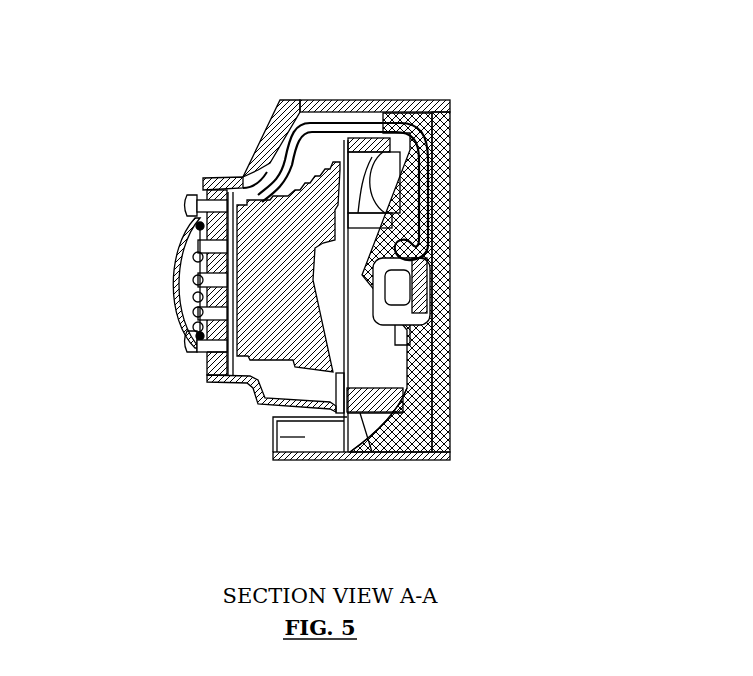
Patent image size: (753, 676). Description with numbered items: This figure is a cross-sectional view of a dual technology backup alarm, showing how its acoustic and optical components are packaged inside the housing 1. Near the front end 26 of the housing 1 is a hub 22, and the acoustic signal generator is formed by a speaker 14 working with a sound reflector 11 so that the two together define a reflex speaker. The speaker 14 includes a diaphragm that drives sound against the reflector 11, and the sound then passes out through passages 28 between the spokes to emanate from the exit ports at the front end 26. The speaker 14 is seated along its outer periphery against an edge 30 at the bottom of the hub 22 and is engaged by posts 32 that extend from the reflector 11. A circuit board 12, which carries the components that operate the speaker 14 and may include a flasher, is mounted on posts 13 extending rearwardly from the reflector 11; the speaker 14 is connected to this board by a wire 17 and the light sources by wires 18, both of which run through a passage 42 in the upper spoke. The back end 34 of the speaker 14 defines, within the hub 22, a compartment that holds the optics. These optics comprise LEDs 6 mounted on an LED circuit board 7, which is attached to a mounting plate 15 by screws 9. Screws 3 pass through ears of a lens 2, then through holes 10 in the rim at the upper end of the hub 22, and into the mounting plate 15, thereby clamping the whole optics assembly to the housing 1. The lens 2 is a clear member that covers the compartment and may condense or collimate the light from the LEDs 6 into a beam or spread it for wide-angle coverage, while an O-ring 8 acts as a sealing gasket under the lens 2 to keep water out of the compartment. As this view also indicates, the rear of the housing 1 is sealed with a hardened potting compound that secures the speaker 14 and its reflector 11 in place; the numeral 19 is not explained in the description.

The housing 1 is at (393, 100).
The lens 2 is at (173, 275).
The screws 3 is at (188, 210).
The LEDs 6 is at (195, 303).
The LED circuit board 7 is at (185, 240).
The O-ring 8 is at (193, 322).
The screws 9 is at (195, 285).
The holes 10 is at (205, 190).
The sound reflector 11 is at (450, 147).
The circuit board 12 is at (450, 340).
The posts 13 is at (450, 307).
The speaker 14 is at (210, 380).
The mounting plate 15 is at (241, 185).
The wire 17 is at (352, 130).
The wires 18 is at (268, 172).
The base portion 19 is at (450, 400).
The hub 22 is at (258, 398).
The front end 26 is at (305, 437).
The passages 28 is at (273, 423).
The edge 30 is at (332, 412).
The posts 32 is at (427, 105).
The back end 34 is at (190, 348).
The passage 42 is at (296, 140).